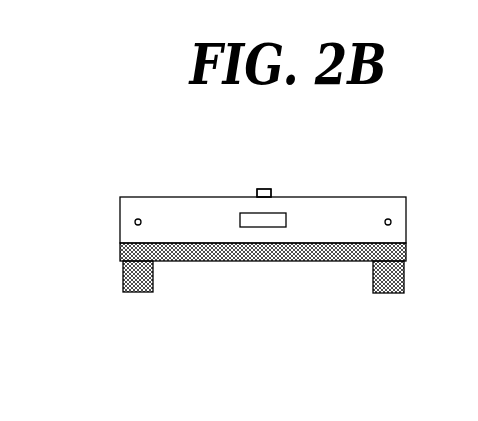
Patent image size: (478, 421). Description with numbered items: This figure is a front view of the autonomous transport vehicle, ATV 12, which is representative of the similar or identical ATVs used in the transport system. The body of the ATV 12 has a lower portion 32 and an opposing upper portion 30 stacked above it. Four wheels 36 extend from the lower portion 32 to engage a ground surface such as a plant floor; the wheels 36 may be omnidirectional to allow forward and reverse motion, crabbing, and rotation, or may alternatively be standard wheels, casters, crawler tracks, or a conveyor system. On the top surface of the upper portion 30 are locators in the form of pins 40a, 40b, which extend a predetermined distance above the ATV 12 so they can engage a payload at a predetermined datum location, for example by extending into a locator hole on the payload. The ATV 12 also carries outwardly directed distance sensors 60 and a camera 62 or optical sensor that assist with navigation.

The ATV 12 is at (384, 127).
The upper portion 30 is at (313, 197).
The lower portion 32 is at (268, 262).
The wheels 36 is at (128, 292).
The pin 40a is at (260, 189).
The pin 40b is at (264, 193).
The distance sensors 60 is at (141, 218).
The camera 62 is at (244, 227).